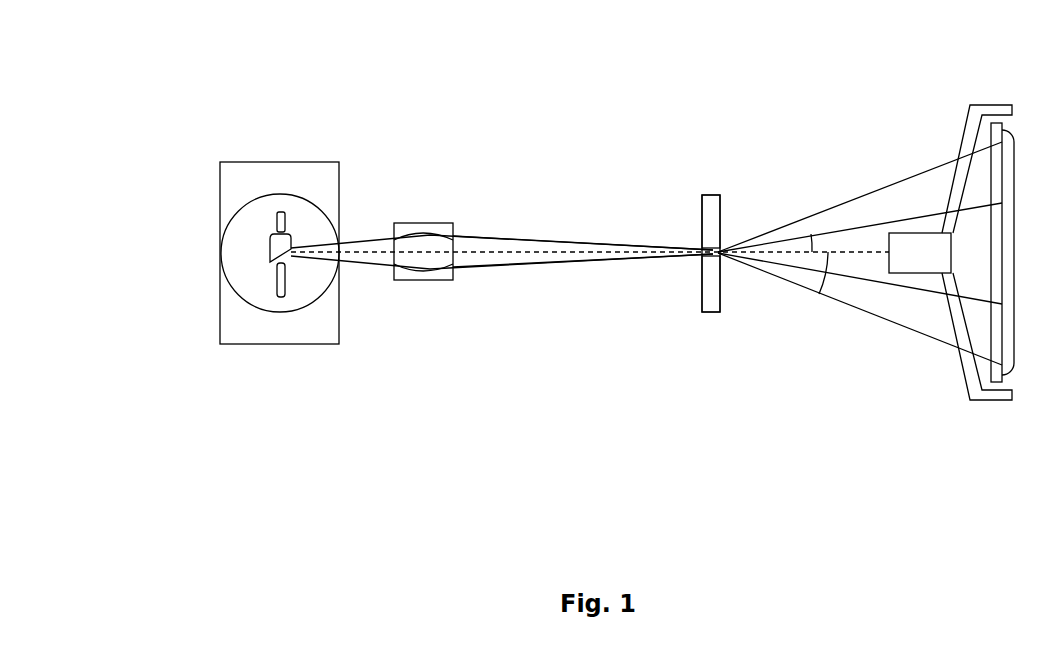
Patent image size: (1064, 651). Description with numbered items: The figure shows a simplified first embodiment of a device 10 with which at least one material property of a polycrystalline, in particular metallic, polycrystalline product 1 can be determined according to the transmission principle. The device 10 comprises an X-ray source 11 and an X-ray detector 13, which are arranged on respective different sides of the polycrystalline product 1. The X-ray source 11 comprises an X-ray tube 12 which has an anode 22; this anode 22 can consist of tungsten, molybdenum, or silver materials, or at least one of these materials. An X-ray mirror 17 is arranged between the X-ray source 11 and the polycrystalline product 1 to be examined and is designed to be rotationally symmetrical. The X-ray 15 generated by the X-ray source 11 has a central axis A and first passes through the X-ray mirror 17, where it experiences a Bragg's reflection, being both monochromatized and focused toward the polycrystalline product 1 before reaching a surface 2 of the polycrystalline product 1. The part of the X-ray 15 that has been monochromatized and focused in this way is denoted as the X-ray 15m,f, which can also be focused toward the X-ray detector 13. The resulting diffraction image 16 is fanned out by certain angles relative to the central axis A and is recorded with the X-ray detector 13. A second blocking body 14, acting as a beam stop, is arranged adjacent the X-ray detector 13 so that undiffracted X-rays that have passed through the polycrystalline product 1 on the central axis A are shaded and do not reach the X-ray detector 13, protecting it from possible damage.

The device 10 is at (132, 451).
The X-ray source 11 is at (273, 162).
The X-ray tube 12 is at (240, 243).
The anode 22 is at (271, 245).
The X-ray 15 is at (377, 242).
The X-ray mirror 17 is at (424, 223).
The monochromatized and focused X-ray 15m,f is at (538, 240).
The central axis A is at (508, 259).
The polycrystalline product 1 is at (711, 195).
The surface 2 is at (675, 165).
The diffraction image 16 is at (845, 197).
The second blocking body 14 is at (922, 242).
The X-ray detector 13 is at (1001, 209).